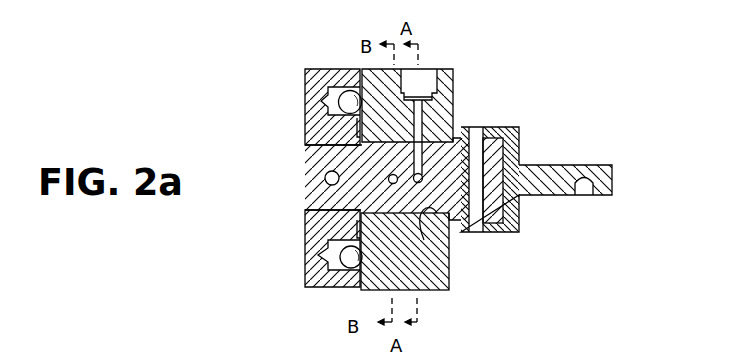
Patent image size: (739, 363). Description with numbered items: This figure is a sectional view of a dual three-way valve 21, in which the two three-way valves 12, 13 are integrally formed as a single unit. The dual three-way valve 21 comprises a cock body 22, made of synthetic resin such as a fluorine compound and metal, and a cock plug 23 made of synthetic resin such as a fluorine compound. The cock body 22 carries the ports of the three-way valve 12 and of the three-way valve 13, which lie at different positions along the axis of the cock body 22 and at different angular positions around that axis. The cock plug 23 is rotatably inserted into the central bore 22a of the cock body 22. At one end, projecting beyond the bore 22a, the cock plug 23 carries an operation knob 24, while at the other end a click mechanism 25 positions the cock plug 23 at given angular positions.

The dual three-way valve 21 is at (550, 163).
The three-way valve 12 is at (550, 163).
The three-way valve 13 is at (528, 143).
The cock body 22 is at (453, 98).
The central bore 22a is at (450, 273).
The cock plug 23 is at (457, 220).
The operation knob 24 is at (607, 180).
The click mechanism 25 is at (305, 244).